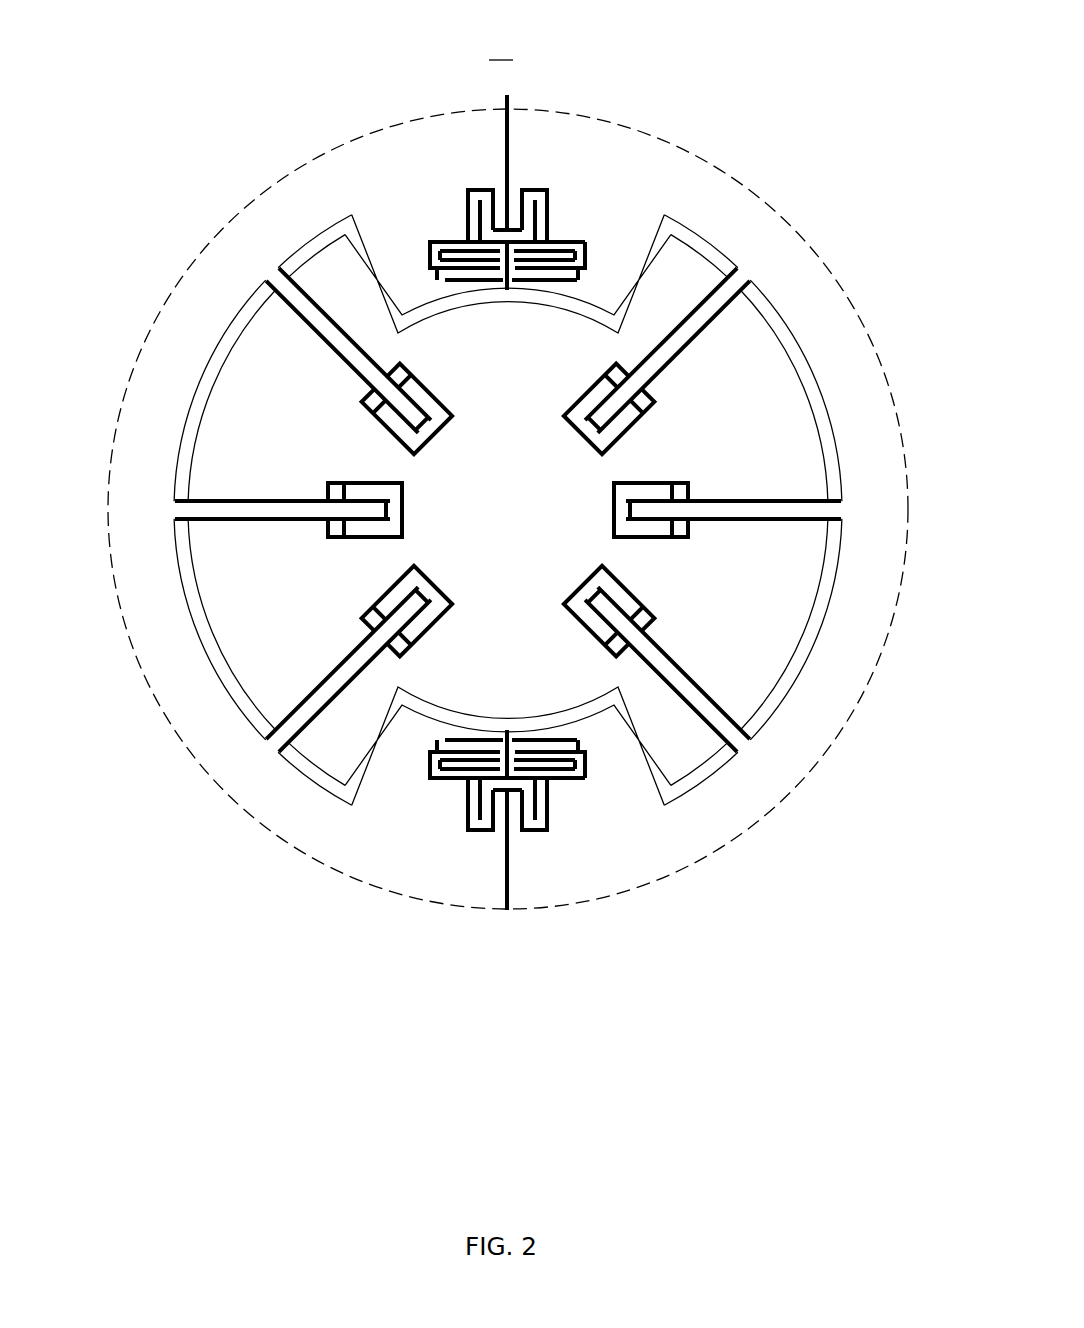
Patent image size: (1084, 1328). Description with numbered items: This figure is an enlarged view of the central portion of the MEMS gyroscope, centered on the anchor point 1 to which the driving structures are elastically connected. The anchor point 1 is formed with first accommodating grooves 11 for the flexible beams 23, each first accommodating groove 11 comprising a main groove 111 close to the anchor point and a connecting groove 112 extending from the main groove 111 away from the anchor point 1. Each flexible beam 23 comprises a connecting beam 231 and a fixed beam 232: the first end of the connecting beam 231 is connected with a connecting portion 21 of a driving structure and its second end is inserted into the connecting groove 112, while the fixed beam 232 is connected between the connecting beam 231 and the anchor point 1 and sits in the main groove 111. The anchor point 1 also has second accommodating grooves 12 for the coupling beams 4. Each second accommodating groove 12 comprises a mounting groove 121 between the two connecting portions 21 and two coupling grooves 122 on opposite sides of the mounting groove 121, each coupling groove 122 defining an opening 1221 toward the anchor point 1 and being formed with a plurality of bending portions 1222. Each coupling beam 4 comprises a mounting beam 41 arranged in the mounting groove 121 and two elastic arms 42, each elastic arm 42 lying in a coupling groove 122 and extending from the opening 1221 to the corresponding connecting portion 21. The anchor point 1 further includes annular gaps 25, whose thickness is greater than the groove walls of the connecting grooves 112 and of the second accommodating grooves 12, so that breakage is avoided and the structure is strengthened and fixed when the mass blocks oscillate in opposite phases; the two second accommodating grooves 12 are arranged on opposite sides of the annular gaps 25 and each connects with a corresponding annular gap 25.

The anchor point 1 is at (505, 512).
The first accommodating groove 11 is at (908, 233).
The main groove 111 is at (640, 410).
The connecting groove 112 is at (698, 313).
The second accommodating groove 12 is at (483, 977).
The mounting groove 121 is at (500, 780).
The coupling groove 122 is at (545, 832).
The opening 1221 is at (588, 762).
The bending portion 1222 is at (582, 770).
The connecting portion 21 is at (163, 380).
The flexible beam 23 is at (880, 800).
The connecting beam 231 is at (700, 703).
The fixed beam 232 is at (722, 752).
The annular gap 25 is at (178, 560).
The coupling beam 4 is at (735, 53).
The mounting beam 41 is at (508, 242).
The elastic arm 42 is at (578, 252).